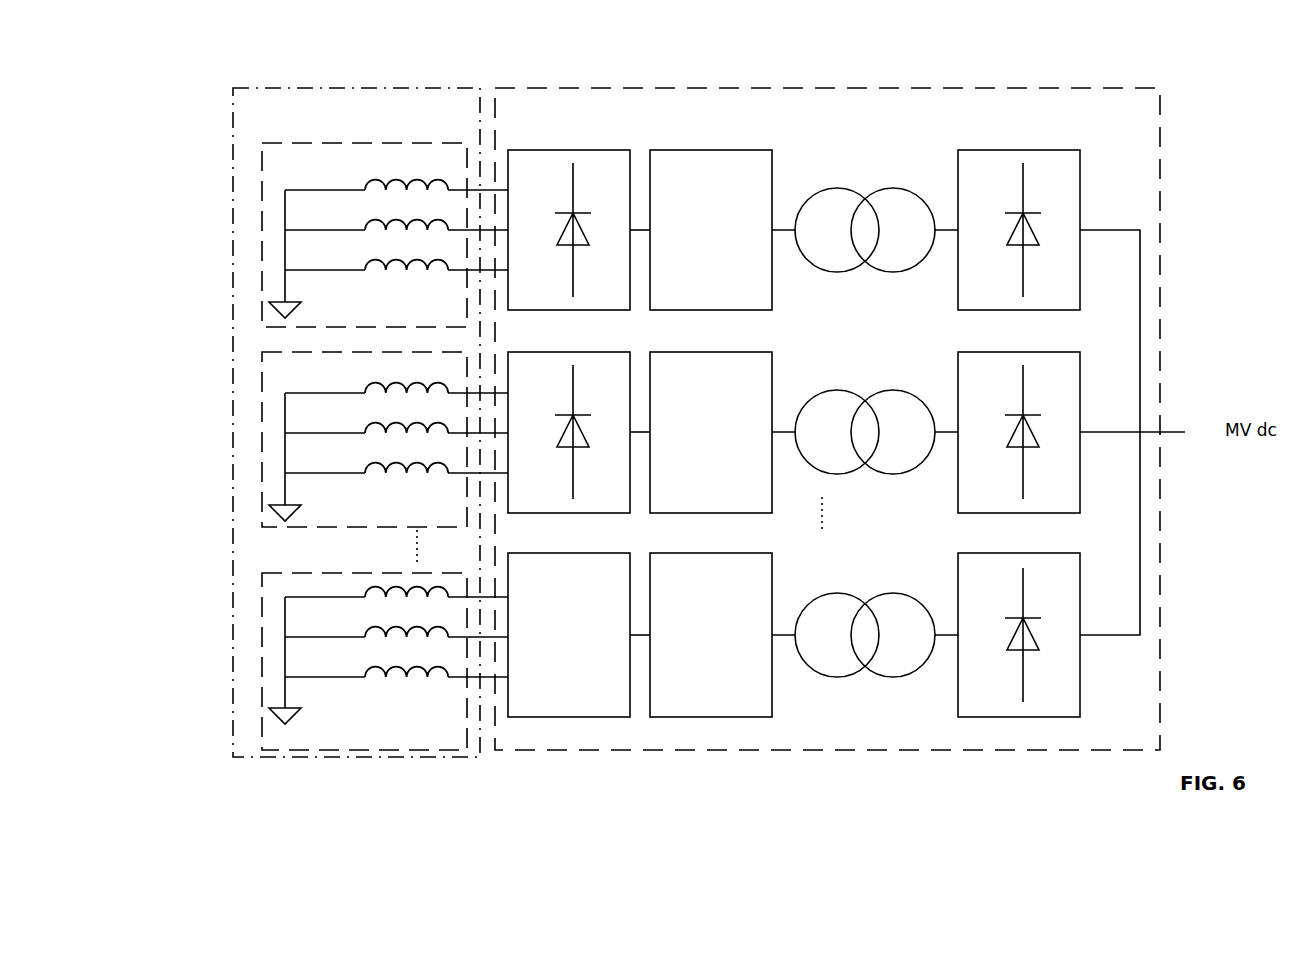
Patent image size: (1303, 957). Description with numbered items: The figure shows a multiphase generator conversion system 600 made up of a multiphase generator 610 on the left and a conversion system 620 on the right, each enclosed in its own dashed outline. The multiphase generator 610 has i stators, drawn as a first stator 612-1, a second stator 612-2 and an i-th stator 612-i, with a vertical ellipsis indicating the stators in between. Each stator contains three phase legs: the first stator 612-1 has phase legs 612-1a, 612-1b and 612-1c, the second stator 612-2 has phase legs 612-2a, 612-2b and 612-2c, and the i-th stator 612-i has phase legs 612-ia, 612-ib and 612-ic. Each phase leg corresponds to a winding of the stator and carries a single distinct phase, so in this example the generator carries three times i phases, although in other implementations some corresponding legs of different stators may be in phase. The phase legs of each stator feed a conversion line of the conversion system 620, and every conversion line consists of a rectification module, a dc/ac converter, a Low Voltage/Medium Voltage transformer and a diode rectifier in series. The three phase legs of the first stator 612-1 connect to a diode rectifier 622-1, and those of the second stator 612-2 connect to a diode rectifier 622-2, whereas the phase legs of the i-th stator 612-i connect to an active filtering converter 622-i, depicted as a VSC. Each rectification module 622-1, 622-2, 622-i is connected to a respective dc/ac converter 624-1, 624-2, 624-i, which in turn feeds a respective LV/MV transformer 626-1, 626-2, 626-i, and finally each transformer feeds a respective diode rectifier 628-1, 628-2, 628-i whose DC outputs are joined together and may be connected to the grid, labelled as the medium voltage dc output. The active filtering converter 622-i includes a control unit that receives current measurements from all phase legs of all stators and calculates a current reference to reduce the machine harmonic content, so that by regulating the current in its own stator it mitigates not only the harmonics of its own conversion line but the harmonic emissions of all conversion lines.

The multiphase generator conversion system 600 is at (1130, 18).
The multiphase generator 610 is at (233, 90).
The conversion system 620 is at (845, 88).
The first stator 612-1 is at (329, 235).
The phase leg 612-1a is at (333, 190).
The phase leg 612-1b is at (302, 230).
The phase leg 612-1c is at (326, 270).
The second stator 612-2 is at (329, 439).
The phase leg 612-2a is at (334, 393).
The phase leg 612-2b is at (303, 433).
The phase leg 612-2c is at (326, 473).
The i-th stator 612-i is at (329, 652).
The phase leg 612-ia is at (345, 597).
The phase leg 612-ib is at (313, 637).
The phase leg 612-ic is at (340, 677).
The diode rectifier 622-1 is at (552, 150).
The diode rectifier 622-2 is at (545, 352).
The active filtering converter 622-i is at (517, 553).
The dc/ac converter 624-1 is at (697, 150).
The dc/ac converter 624-2 is at (690, 352).
The dc/ac converter 624-i is at (660, 553).
The LV/MV transformer 626-1 is at (855, 190).
The LV/MV transformer 626-2 is at (825, 397).
The LV/MV transformer 626-i is at (820, 598).
The diode rectifier 628-1 is at (1012, 150).
The diode rectifier 628-2 is at (1000, 352).
The diode rectifier 628-i is at (975, 553).